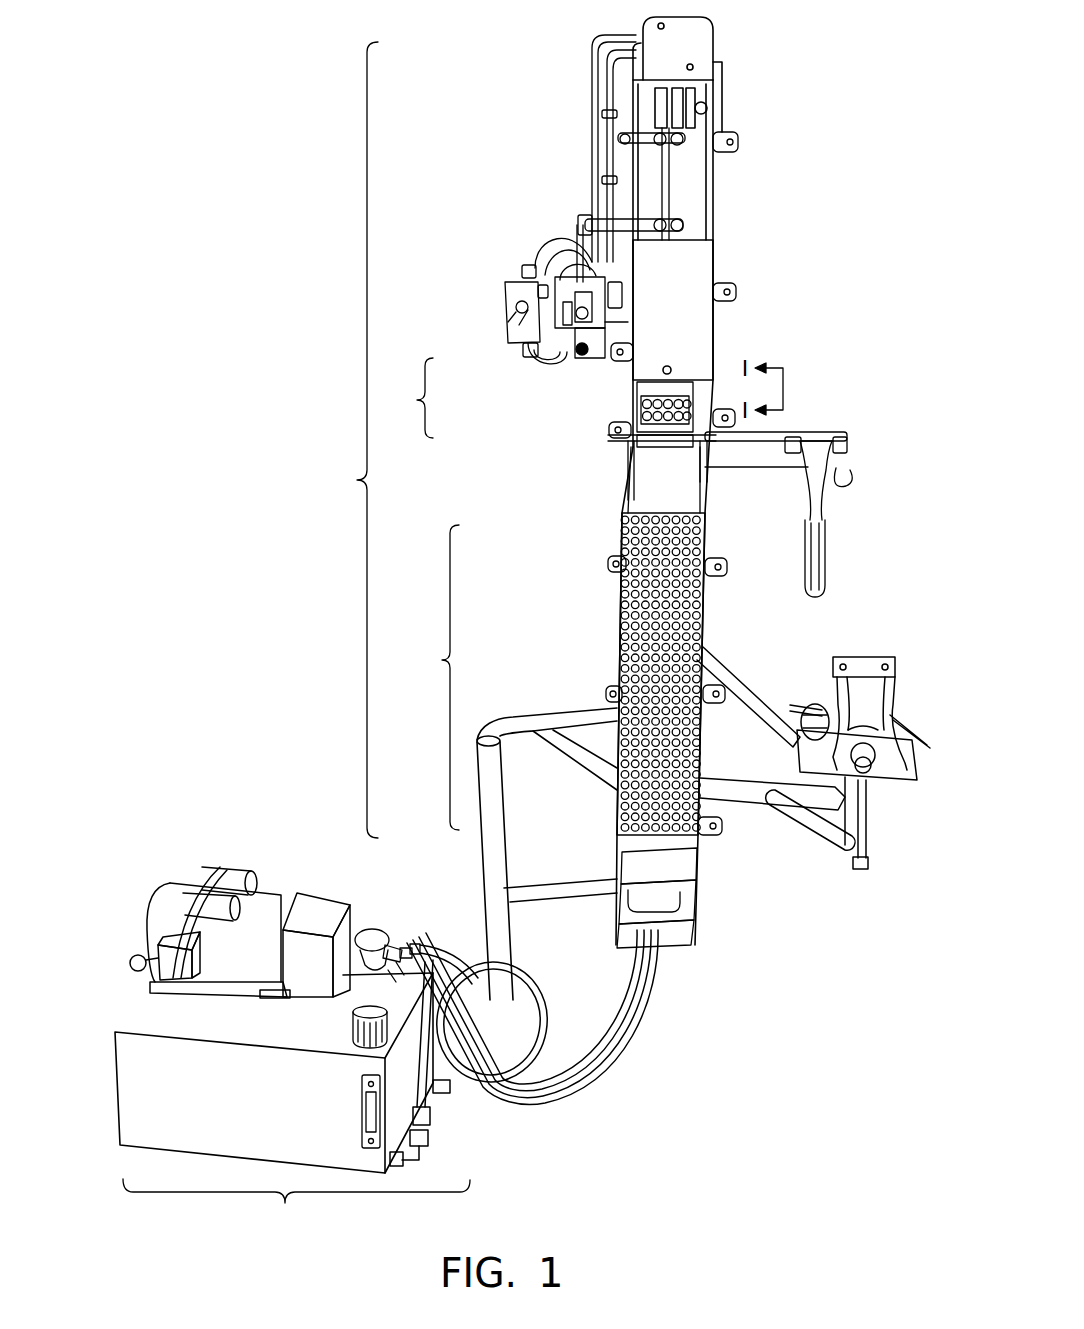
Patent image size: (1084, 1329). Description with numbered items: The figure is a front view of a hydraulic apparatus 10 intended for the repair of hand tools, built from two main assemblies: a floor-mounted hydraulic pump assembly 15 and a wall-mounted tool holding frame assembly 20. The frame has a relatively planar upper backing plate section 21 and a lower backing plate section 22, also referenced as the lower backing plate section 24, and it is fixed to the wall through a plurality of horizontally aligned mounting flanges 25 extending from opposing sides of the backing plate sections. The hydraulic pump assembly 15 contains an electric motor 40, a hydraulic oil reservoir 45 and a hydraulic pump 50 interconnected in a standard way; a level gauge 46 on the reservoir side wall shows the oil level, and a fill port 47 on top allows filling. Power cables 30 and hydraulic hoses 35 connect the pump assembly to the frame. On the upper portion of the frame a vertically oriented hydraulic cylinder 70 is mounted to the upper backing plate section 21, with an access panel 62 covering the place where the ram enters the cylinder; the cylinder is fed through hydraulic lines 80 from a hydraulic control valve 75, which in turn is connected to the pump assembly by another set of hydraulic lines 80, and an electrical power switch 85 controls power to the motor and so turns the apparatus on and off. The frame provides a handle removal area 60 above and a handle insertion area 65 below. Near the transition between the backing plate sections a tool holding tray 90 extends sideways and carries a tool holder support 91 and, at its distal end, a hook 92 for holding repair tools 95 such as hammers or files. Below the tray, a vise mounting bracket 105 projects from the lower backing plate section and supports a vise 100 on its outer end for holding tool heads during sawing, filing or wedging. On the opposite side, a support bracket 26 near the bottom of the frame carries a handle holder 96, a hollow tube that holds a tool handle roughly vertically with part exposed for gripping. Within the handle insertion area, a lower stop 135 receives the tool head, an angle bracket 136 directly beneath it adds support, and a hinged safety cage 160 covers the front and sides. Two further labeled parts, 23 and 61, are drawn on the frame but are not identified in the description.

The hydraulic apparatus 10 is at (466, 30).
The hydraulic pump assembly 15 is at (296, 1208).
The tool holding frame assembly 20 is at (348, 440).
The upper backing plate section 21 is at (717, 233).
The lower backing plate section 22 is at (622, 388).
The frame members 23 is at (630, 449).
The lower backing plate section 24 is at (637, 498).
The mounting flanges 25 is at (742, 142).
The support bracket 26 is at (536, 705).
The power cables 30 is at (570, 1095).
The hydraulic hoses 35 is at (592, 1040).
The electric motor 40 is at (232, 870).
The hydraulic oil reservoir 45 is at (115, 1085).
The level gauge 46 is at (375, 1148).
The fill port 47 is at (348, 1020).
The hydraulic pump 50 is at (378, 928).
The handle removal area 60 is at (406, 398).
The mounting bar 61 is at (623, 437).
The access panel 62 is at (700, 345).
The handle insertion area 65 is at (430, 677).
The hydraulic cylinder 70 is at (672, 200).
The hydraulic control valve 75 is at (548, 325).
The hydraulic lines 80 is at (585, 228).
The electrical power switch 85 is at (508, 318).
The tool holding tray 90 is at (775, 465).
The tool holder support 91 is at (835, 455).
The hook 92 is at (852, 483).
The repair tools 95 is at (818, 553).
The handle holder 96 is at (508, 826).
The vise 100 is at (870, 670).
The vise mounting bracket 105 is at (755, 680).
The lower stop 135 is at (682, 875).
The angle bracket 136 is at (677, 943).
The safety cage 160 is at (662, 571).